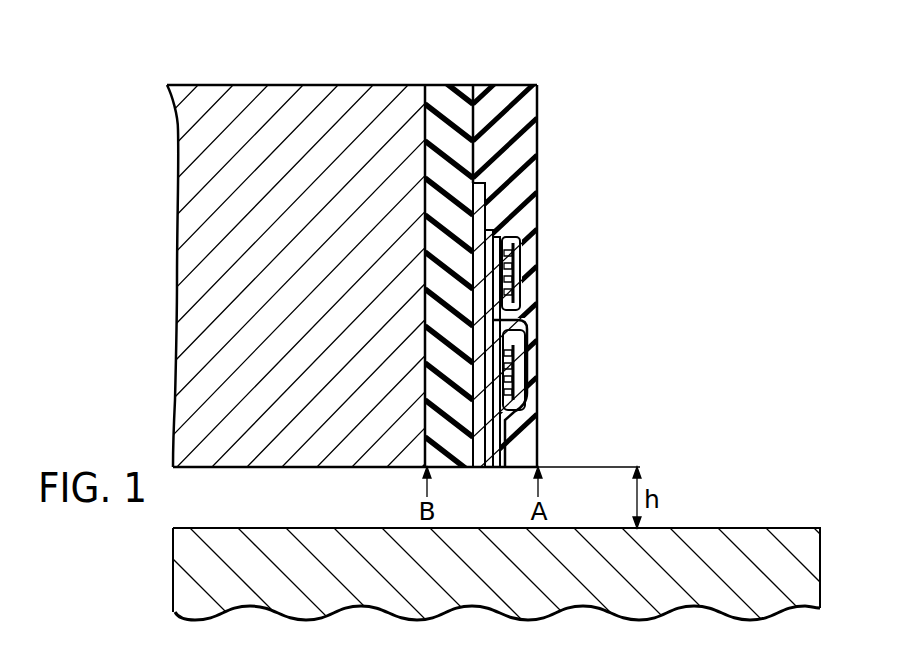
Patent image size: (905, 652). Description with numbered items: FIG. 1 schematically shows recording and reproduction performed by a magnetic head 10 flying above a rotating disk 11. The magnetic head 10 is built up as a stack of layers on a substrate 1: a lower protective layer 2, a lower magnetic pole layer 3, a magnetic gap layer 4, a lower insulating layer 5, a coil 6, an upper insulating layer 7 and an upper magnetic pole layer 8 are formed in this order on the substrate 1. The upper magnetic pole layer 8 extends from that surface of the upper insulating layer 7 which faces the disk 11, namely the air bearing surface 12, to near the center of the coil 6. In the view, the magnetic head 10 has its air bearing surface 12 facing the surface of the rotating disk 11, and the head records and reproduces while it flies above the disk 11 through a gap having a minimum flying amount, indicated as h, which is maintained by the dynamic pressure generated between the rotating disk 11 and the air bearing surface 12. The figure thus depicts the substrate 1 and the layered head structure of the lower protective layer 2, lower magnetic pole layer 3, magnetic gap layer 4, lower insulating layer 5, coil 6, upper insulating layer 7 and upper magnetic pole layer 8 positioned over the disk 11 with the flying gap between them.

The substrate 1 is at (388, 85).
The lower protective layer 2 is at (447, 85).
The lower magnetic pole layer 3 is at (479, 195).
The magnetic gap layer 4 is at (489, 233).
The lower insulating layer 5 is at (497, 240).
The coil 6 is at (521, 262).
The upper insulating layer 7 is at (512, 247).
The upper magnetic pole layer 8 is at (521, 335).
The magnetic head 10 is at (305, 80).
The disk 11 is at (746, 528).
The air bearing surface 12 is at (255, 468).